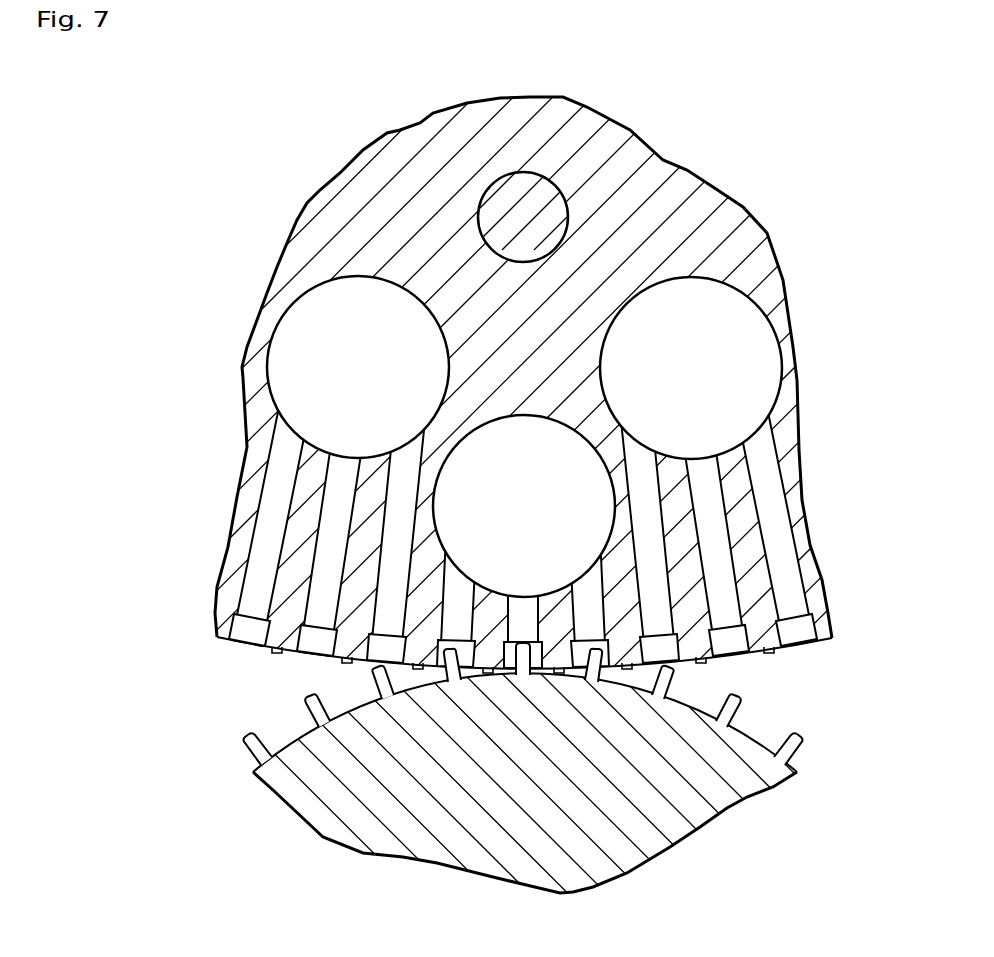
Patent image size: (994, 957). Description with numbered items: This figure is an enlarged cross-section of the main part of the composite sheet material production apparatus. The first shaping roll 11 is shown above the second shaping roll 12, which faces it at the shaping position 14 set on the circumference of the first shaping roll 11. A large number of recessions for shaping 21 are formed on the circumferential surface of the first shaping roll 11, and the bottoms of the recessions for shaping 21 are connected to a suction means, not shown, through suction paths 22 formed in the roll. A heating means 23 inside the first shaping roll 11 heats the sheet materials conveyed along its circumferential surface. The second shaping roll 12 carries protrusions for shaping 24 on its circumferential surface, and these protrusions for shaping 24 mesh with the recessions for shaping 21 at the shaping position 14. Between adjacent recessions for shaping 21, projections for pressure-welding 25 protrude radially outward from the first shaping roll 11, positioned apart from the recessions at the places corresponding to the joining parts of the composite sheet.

The first shaping roll 11 is at (747, 242).
The second shaping roll 12 is at (630, 866).
The shaping position 14 is at (507, 675).
The recessions for shaping 21 is at (308, 653).
The suction paths 22 is at (472, 425).
The heating means 23 is at (493, 190).
The protrusions for shaping 24 is at (262, 744).
The projections for pressure-welding 25 is at (775, 652).